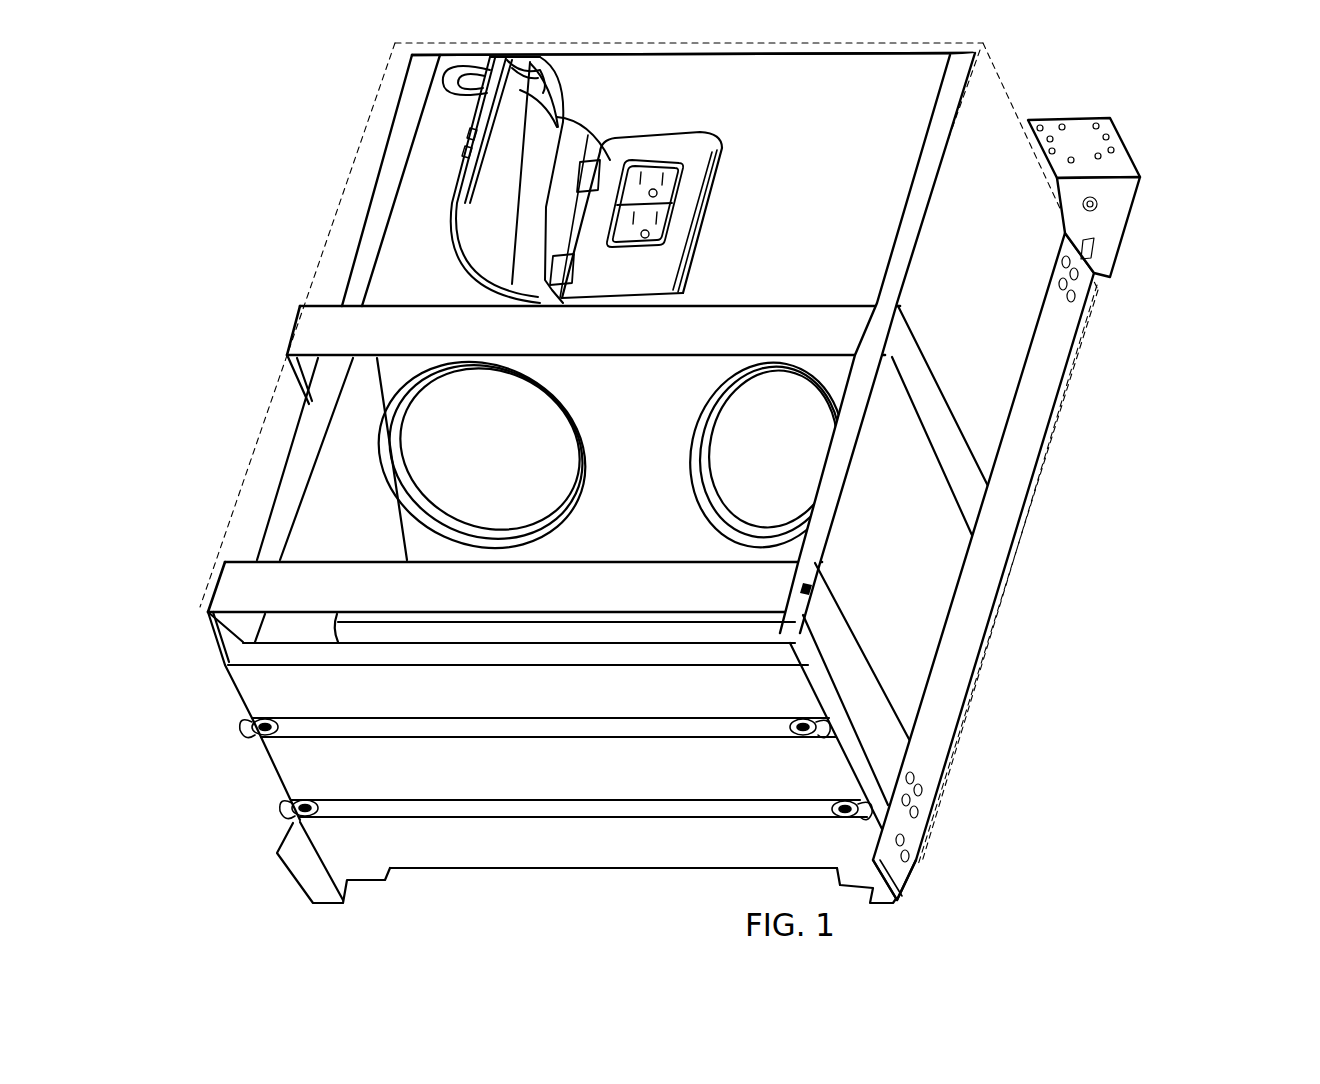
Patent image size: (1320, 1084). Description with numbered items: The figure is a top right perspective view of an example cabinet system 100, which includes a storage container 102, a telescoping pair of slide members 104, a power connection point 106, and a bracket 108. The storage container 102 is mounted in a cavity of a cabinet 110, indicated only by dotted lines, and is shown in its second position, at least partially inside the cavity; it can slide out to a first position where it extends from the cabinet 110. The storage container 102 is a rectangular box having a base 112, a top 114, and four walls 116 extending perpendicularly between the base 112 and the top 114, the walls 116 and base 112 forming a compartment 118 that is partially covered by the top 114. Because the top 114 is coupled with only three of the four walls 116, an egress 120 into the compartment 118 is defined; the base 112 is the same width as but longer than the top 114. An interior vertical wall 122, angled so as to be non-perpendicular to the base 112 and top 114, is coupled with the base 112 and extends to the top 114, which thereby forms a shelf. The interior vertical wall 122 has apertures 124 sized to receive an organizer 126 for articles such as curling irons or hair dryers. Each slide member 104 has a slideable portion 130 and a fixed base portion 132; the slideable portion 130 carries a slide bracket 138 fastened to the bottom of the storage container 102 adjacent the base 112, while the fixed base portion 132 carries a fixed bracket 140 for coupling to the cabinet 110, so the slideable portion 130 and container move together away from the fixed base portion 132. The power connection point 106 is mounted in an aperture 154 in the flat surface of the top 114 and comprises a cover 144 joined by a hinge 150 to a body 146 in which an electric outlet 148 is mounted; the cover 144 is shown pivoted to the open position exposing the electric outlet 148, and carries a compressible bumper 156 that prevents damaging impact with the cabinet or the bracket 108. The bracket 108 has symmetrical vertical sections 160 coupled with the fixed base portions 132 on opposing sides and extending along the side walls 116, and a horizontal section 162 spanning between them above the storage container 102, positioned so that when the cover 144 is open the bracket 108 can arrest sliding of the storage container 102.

The cabinet system 100 is at (1240, 320).
The storage container 102 is at (400, 62).
The slide members 104 is at (564, 788).
The power connection point 106 is at (706, 88).
The bracket 108 is at (982, 510).
The cabinet 110 is at (1090, 325).
The base 112 is at (565, 873).
The top 114 is at (907, 92).
The walls 116 is at (170, 815).
The compartment 118 is at (622, 540).
The egress 120 is at (604, 461).
The interior vertical wall 122 is at (652, 383).
The apertures 124 is at (649, 546).
The organizer 126 is at (458, 467).
The slideable portion 130 is at (922, 874).
The fixed base portion 132 is at (1022, 437).
The slide bracket 138 is at (395, 873).
The fixed bracket 140 is at (1105, 195).
The cover 144 is at (448, 228).
The body 146 is at (700, 160).
The electric outlet 148 is at (648, 220).
The hinge 150 is at (594, 180).
The aperture 154 is at (717, 190).
The bumper 156 is at (545, 94).
The vertical sections 160 is at (920, 400).
The horizontal section 162 is at (355, 318).